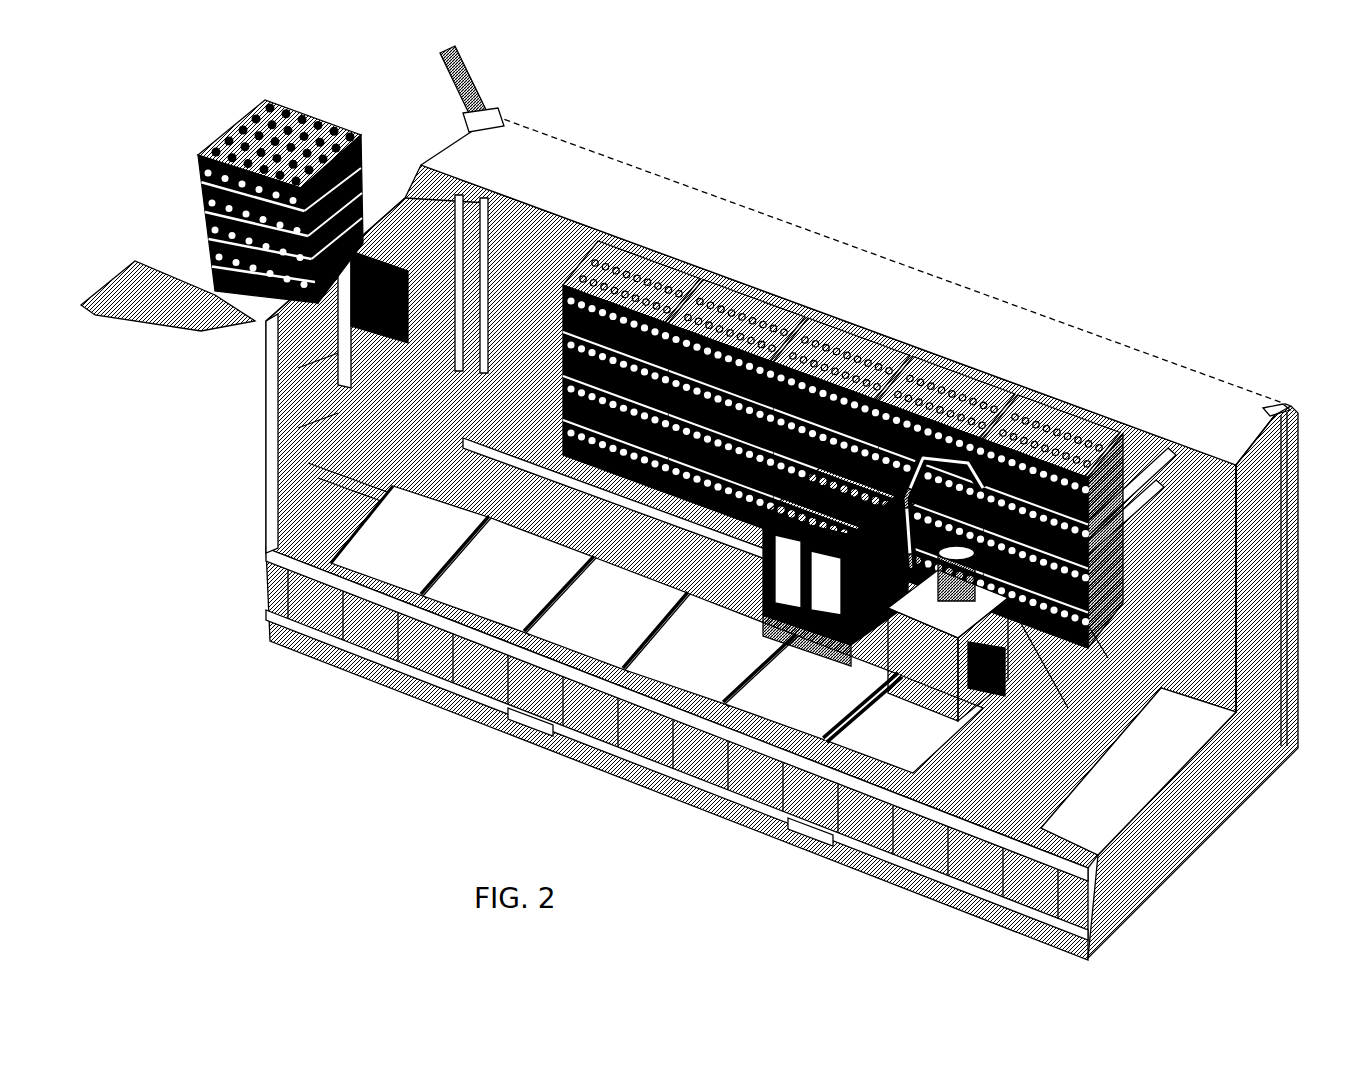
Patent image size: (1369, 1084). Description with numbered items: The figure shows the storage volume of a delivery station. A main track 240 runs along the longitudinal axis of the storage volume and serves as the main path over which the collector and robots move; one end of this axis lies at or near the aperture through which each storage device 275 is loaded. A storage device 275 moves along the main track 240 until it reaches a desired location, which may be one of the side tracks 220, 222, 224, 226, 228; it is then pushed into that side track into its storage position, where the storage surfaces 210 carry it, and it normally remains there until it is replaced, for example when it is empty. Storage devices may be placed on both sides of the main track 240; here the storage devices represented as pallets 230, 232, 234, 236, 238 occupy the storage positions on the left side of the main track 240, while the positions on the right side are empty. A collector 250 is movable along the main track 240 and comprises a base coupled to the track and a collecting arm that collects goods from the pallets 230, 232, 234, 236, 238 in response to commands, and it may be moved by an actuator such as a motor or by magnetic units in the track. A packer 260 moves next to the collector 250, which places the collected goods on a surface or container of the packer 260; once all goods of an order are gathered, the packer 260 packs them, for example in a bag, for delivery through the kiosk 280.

The storage surfaces 210 is at (798, 808).
The side track 220 is at (825, 730).
The side track 222 is at (730, 695).
The side track 224 is at (650, 650).
The side track 226 is at (545, 605).
The side track 228 is at (450, 565).
The pallet 230 is at (1075, 405).
The pallet 232 is at (962, 362).
The pallet 234 is at (848, 325).
The pallet 236 is at (775, 292).
The pallet 238 is at (655, 250).
The main track 240 is at (1120, 730).
The collector 250 is at (900, 700).
The packer 260 is at (840, 668).
The storage device 275 is at (217, 130).
The kiosk 280 is at (262, 455).